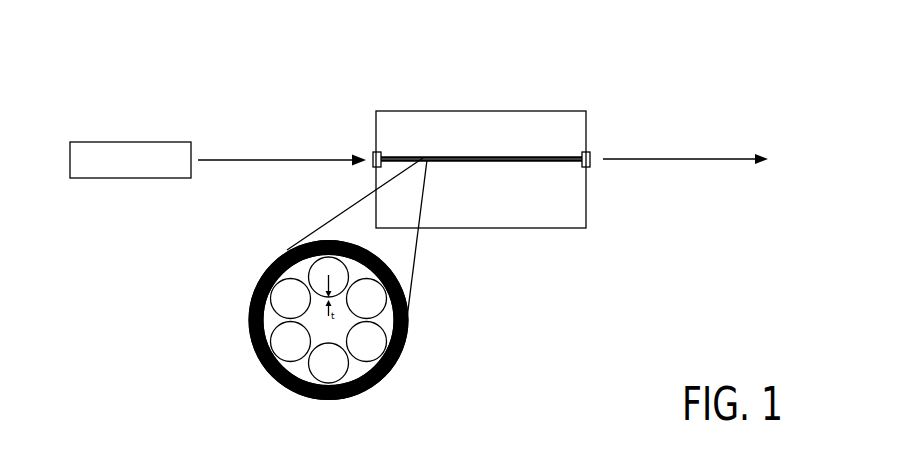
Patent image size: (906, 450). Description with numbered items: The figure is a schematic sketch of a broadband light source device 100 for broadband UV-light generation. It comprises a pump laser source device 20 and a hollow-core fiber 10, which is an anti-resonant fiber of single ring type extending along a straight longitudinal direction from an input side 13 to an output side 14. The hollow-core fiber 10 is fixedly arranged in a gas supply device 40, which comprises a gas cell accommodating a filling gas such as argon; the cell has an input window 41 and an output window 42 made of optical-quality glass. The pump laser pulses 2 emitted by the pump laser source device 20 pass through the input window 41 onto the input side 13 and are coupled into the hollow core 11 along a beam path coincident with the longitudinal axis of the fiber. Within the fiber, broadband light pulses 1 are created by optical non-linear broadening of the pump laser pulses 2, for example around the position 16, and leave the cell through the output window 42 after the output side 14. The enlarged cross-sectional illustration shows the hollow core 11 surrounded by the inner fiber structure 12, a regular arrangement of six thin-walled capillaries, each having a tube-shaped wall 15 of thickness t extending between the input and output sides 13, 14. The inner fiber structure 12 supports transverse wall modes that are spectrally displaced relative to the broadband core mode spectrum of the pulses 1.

The broadband light source device 100 is at (156, 71).
The pump laser source device 20 is at (122, 155).
The pump laser pulses 2 is at (295, 158).
The gas supply device 40 is at (520, 228).
The input window 41 is at (372, 156).
The output window 42 is at (592, 162).
The input side 13 is at (381, 152).
The output side 14 is at (584, 152).
The position 16 is at (545, 156).
The hollow-core fiber 10 is at (480, 157).
The wall 15 is at (287, 388).
The hollow core 11 is at (330, 328).
The inner fiber structure 12 is at (327, 368).
The broadband light pulses 1 is at (727, 162).